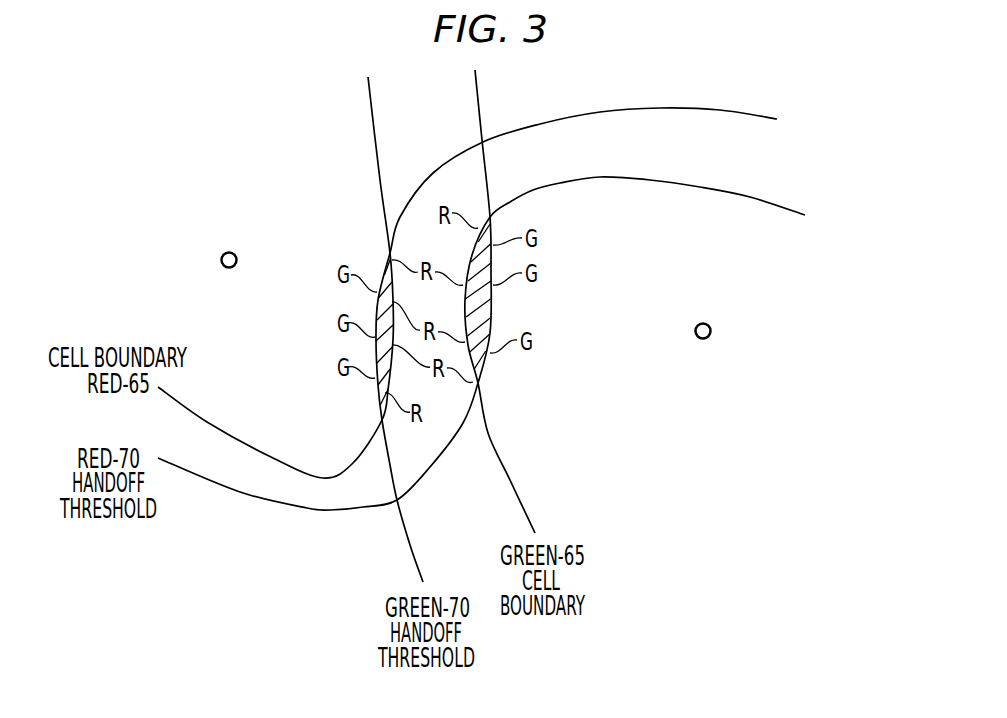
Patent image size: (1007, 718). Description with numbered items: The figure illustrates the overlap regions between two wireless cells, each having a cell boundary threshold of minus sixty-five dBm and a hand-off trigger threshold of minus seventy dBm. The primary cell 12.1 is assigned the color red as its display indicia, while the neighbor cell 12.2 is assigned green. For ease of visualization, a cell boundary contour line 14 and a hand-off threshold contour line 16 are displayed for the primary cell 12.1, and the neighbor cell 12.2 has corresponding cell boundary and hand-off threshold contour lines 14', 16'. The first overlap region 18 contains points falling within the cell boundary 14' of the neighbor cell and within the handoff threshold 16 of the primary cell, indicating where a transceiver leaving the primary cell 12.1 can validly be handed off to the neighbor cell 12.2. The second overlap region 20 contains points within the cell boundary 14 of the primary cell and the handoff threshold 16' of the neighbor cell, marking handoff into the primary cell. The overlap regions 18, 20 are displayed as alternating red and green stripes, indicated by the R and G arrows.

The primary cell 12.1 is at (221, 261).
The neighbor cell 12.2 is at (695, 332).
The cell boundary contour line 14 is at (275, 277).
The cell boundary contour line of the neighbor cell 14' is at (635, 355).
The hand-off threshold contour line 16 is at (324, 309).
The hand-off threshold contour line of the neighbor cell 16' is at (576, 318).
The first overlap region 18 is at (558, 253).
The second overlap region 20 is at (311, 370).